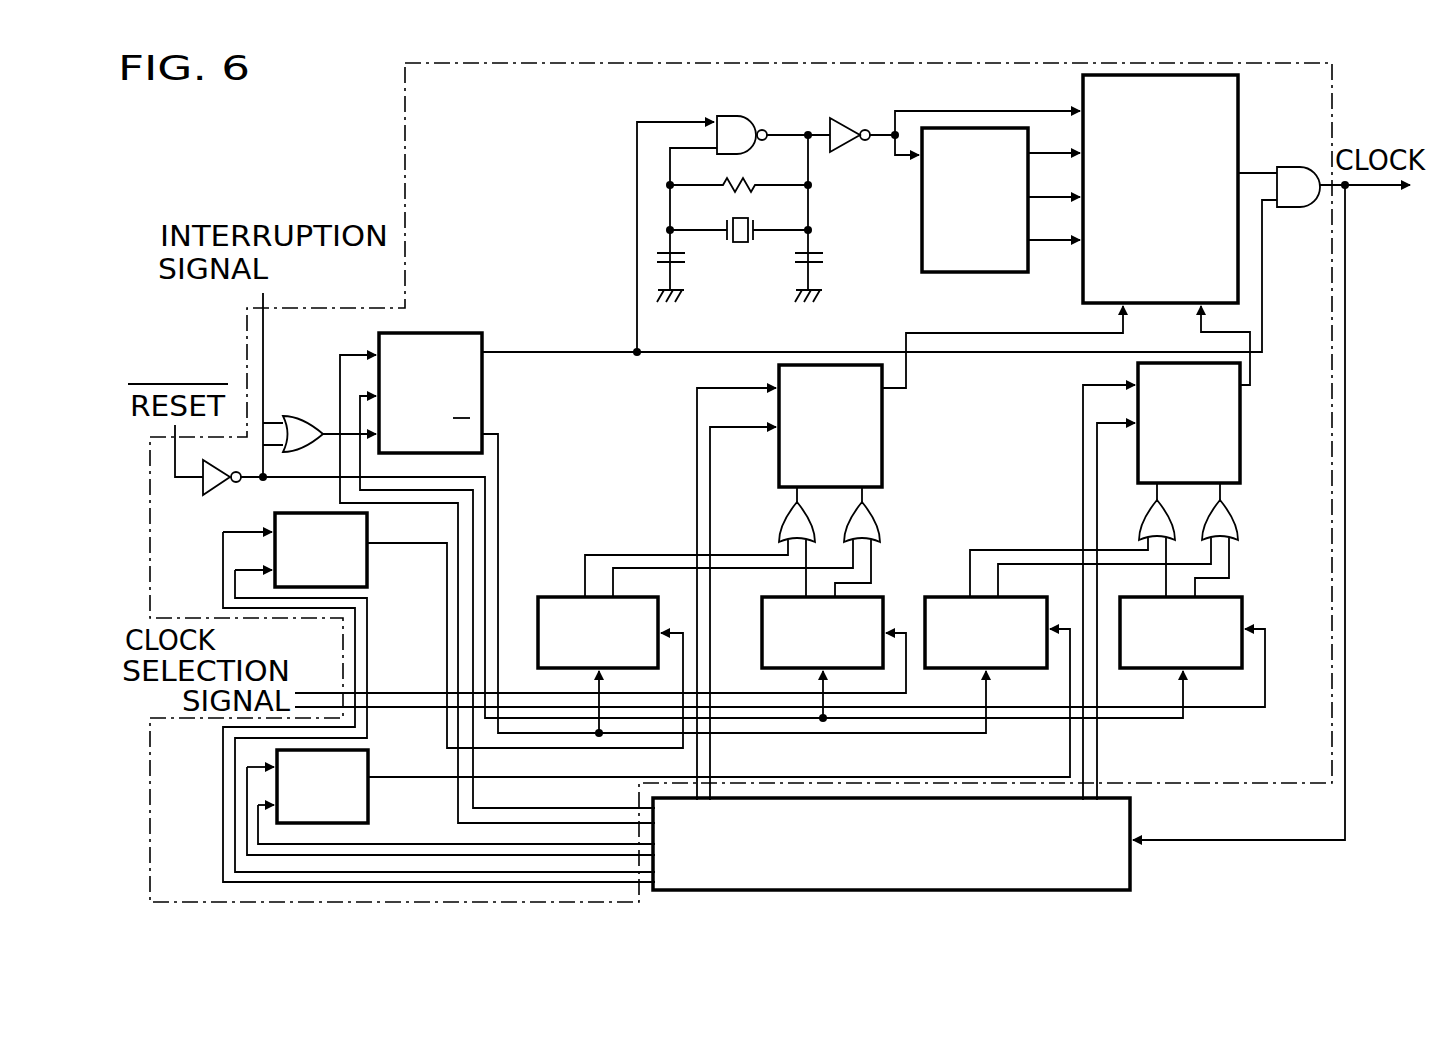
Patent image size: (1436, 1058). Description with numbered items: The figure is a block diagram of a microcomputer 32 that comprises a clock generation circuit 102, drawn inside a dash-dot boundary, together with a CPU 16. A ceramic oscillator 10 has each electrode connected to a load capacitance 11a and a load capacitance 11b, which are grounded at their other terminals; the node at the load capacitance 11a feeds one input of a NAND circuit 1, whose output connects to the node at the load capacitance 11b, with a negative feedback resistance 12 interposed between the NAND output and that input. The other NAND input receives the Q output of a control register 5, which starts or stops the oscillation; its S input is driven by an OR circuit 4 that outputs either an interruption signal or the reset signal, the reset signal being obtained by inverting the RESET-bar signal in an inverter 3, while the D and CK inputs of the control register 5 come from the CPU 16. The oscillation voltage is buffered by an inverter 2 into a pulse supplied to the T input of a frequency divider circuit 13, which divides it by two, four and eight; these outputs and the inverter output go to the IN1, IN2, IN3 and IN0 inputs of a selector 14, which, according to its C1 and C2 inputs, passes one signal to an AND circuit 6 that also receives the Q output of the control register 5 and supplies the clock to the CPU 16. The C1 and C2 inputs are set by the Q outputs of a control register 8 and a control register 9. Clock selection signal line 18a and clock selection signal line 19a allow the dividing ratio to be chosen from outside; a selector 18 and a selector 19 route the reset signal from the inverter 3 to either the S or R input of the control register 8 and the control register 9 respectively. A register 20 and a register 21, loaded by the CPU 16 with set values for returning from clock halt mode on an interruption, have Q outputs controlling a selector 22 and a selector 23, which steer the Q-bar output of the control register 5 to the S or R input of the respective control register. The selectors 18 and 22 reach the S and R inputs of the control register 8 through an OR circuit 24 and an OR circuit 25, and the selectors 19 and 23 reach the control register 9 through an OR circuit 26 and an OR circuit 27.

The NAND circuit 1 is at (757, 124).
The inverter 2 is at (843, 150).
The inverter 3 is at (206, 491).
The OR circuit 4 is at (302, 415).
The control register 5 is at (452, 333).
The AND circuit 6 is at (1297, 207).
The control register 8 is at (882, 432).
The control register 9 is at (1240, 430).
The ceramic oscillator 10 is at (724, 220).
The load capacitance 11a is at (690, 261).
The load capacitance 11b is at (830, 261).
The negative feedback resistance 12 is at (752, 178).
The frequency divider circuit 13 is at (922, 215).
The selector 14 is at (1238, 90).
The CPU 16 is at (1130, 826).
The selector 18 is at (762, 620).
The clock selection signal line 18a is at (415, 692).
The selector 19 is at (1243, 614).
The clock selection signal line 19a is at (417, 708).
The register 20 is at (367, 556).
The register 21 is at (368, 802).
The selector 22 is at (540, 605).
The selector 23 is at (925, 605).
The OR circuit 24 is at (786, 530).
The OR circuit 25 is at (876, 530).
The OR circuit 26 is at (1145, 530).
The OR circuit 27 is at (1238, 528).
The microcomputer 32 is at (332, 189).
The clock generation circuit 102 is at (405, 130).